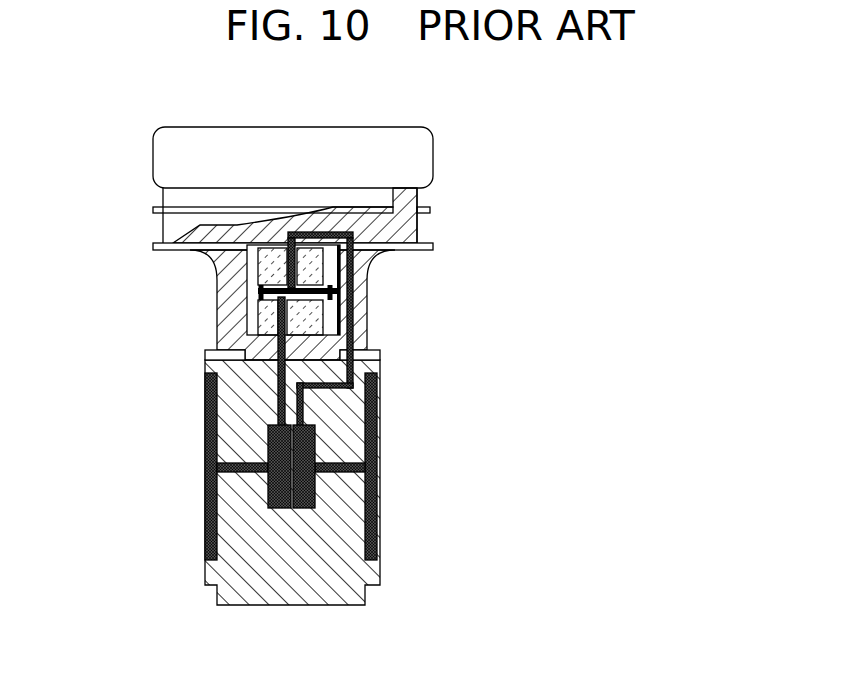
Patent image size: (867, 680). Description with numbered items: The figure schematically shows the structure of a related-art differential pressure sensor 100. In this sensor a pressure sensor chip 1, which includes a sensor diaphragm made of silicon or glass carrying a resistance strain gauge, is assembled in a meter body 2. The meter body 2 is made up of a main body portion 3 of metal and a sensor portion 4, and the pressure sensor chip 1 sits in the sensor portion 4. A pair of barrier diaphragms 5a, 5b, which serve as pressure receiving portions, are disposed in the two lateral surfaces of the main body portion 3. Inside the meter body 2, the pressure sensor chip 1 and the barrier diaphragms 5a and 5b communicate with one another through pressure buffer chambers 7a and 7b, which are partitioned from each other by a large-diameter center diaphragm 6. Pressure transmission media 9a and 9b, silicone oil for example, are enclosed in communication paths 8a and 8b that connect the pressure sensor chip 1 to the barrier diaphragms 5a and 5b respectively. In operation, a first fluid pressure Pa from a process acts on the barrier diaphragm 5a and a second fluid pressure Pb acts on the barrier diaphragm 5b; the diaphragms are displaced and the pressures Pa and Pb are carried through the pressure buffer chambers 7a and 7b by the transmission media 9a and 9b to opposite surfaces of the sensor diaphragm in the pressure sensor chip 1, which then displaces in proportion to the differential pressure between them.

The differential pressure sensor 100 is at (474, 154).
The meter body 2 is at (410, 233).
The sensor portion 4 is at (215, 275).
The pressure sensor chip 1 is at (340, 289).
The pressure transmission medium 9a is at (258, 309).
The pressure transmission medium 9b is at (345, 314).
The communication path 8a is at (212, 355).
The communication path 8b is at (380, 355).
The barrier diaphragm 5a is at (207, 413).
The barrier diaphragm 5b is at (380, 408).
The first fluid pressure Pa is at (200, 467).
The second fluid pressure Pb is at (385, 467).
The center diaphragm 6 is at (300, 440).
The pressure buffer chamber 7a is at (270, 490).
The pressure buffer chamber 7b is at (303, 495).
The main body portion 3 is at (330, 575).